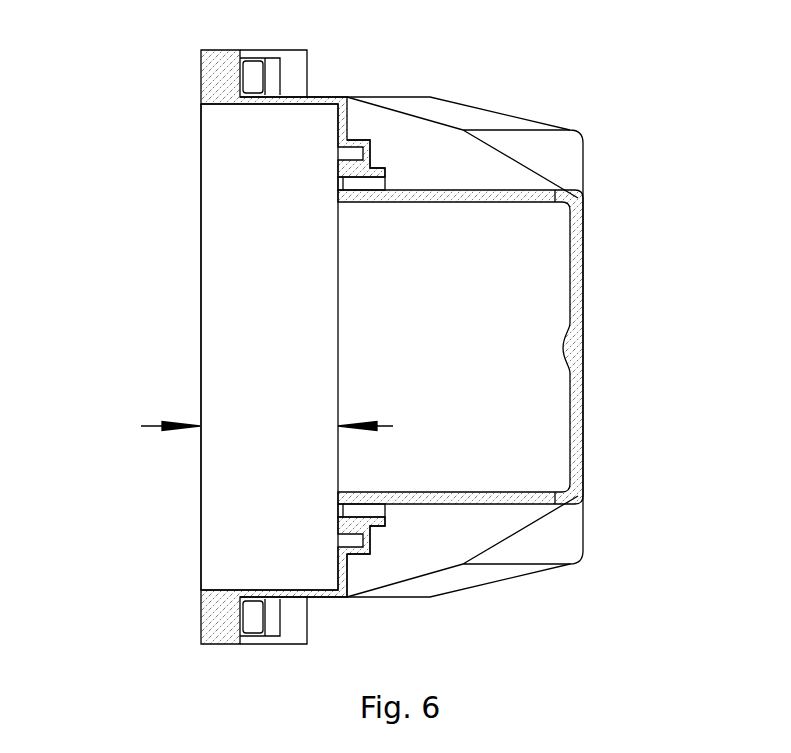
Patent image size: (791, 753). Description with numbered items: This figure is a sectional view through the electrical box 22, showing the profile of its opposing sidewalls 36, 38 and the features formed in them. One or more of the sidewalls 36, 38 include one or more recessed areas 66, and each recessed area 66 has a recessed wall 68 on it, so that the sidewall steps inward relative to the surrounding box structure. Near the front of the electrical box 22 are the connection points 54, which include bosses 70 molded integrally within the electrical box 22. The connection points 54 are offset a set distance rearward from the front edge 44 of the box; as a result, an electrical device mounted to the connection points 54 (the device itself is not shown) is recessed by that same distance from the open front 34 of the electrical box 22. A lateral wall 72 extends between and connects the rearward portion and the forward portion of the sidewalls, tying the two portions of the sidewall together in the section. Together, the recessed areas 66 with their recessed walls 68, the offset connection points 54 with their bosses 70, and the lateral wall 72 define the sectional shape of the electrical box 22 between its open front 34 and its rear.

The electrical box 22 is at (138, 88).
The open front 34 is at (213, 275).
The sidewall 36 is at (292, 313).
The sidewall 38 is at (322, 97).
The front edge 44 is at (197, 349).
The connection point 54 is at (338, 183).
The recessed area 66 is at (443, 173).
The recessed wall 68 is at (473, 198).
The boss 70 is at (352, 168).
The lateral wall 72 is at (340, 573).